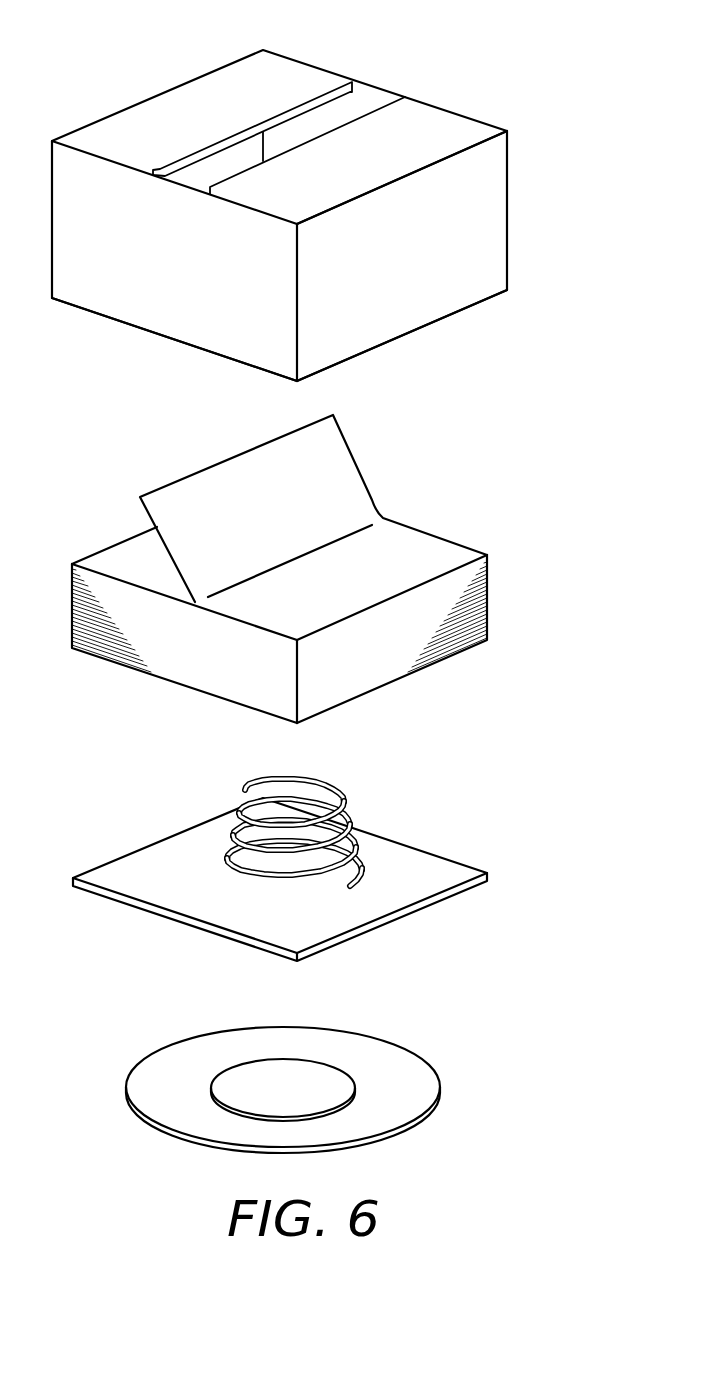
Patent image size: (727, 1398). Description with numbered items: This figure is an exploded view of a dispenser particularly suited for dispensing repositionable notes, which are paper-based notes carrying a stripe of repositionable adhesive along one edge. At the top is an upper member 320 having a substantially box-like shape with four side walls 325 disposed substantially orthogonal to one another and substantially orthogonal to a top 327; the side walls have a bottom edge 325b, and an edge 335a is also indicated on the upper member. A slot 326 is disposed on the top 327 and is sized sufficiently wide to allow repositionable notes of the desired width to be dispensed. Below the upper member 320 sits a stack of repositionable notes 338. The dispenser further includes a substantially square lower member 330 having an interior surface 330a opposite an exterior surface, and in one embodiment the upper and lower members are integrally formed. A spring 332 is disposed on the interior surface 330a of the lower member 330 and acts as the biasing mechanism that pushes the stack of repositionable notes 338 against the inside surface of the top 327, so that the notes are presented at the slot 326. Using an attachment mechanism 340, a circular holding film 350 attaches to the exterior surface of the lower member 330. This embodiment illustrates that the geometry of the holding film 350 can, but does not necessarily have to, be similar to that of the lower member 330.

The upper member 320 is at (331, 202).
The slot 326 is at (365, 99).
The top 327 is at (380, 171).
The edge of housing 335a is at (462, 153).
The bottom edge 325b is at (455, 314).
The side walls 325 is at (322, 297).
The stack of repositionable notes 338 is at (478, 600).
The lower member 330 is at (317, 870).
The interior surface 330a is at (200, 889).
The spring 332 is at (354, 798).
The attachment mechanism 340 is at (318, 1075).
The circular holding film 350 is at (334, 1085).